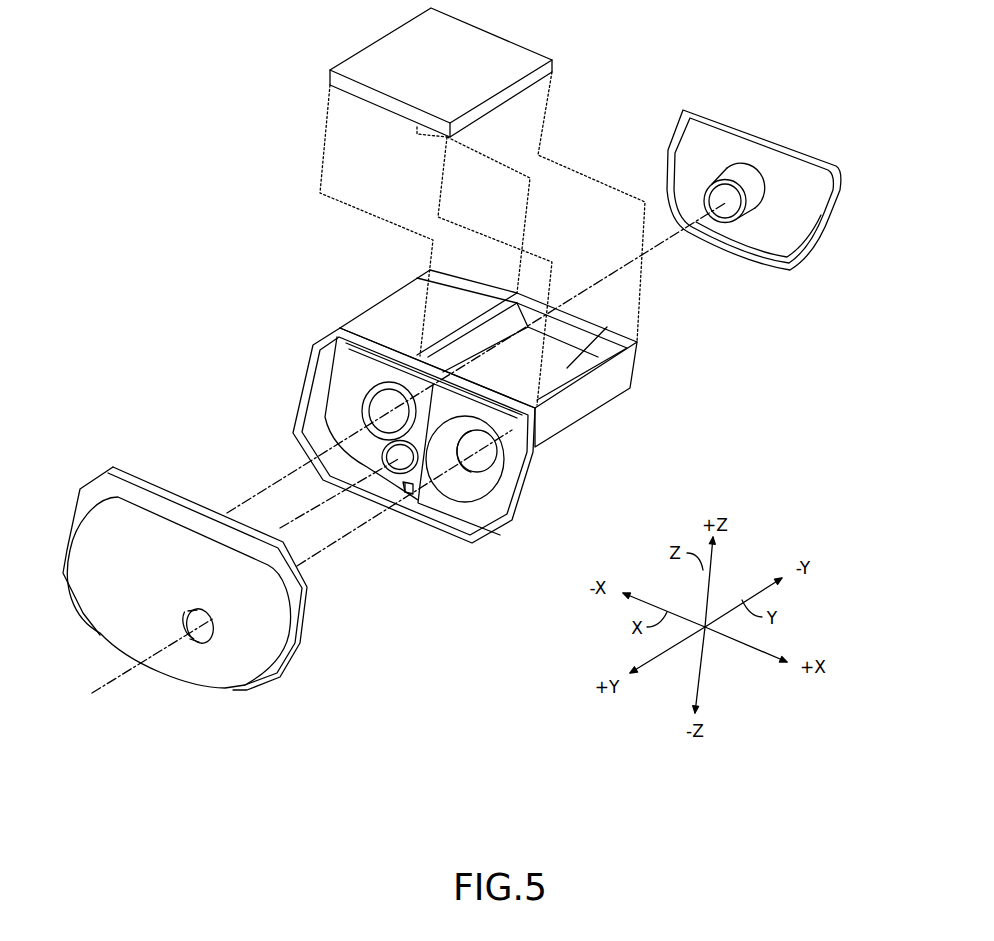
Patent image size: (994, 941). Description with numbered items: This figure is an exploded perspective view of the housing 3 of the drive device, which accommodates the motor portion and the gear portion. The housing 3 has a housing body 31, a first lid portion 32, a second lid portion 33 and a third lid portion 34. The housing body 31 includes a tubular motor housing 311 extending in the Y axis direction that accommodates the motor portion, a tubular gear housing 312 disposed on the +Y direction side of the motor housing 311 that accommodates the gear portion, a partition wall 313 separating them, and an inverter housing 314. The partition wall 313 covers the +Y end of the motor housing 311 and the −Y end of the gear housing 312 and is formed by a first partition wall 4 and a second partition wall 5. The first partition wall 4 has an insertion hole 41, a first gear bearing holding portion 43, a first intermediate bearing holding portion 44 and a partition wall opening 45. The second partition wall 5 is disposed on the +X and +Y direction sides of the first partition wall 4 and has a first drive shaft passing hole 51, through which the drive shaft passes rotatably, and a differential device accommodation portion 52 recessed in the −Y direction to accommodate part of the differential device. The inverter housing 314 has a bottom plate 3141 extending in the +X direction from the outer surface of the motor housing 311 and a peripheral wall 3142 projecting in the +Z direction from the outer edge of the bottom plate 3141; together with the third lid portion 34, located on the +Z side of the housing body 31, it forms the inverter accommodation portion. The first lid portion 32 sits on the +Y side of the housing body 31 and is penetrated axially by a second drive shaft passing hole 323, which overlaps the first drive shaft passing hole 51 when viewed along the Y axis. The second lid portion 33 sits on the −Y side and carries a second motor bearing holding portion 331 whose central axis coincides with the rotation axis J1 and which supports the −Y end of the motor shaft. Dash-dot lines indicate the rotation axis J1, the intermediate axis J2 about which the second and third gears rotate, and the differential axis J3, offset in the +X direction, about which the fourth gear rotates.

The housing 3 is at (187, 186).
The housing body 31 is at (353, 318).
The motor housing 311 is at (390, 313).
The gear housing 312 is at (322, 353).
The partition wall 313 is at (414, 472).
The inverter housing 314 is at (553, 351).
The bottom plate 3141 is at (647, 322).
The peripheral wall 3142 is at (551, 347).
The first lid portion 32 is at (168, 597).
The second drive shaft passing hole 323 is at (203, 650).
The second lid portion 33 is at (754, 177).
The second motor bearing holding portion 331 is at (738, 175).
The third lid portion 34 is at (505, 51).
The first partition wall 4 is at (334, 467).
The insertion hole 41 is at (385, 407).
The first gear bearing holding portion 43 is at (366, 394).
The first intermediate bearing holding portion 44 is at (382, 453).
The partition wall opening 45 is at (410, 495).
The second partition wall 5 is at (502, 494).
The first drive shaft passing hole 51 is at (492, 473).
The differential device accommodation portion 52 is at (494, 487).
The rotation axis J1 is at (247, 504).
The intermediate axis J2 is at (297, 528).
The differential axis J3 is at (106, 689).